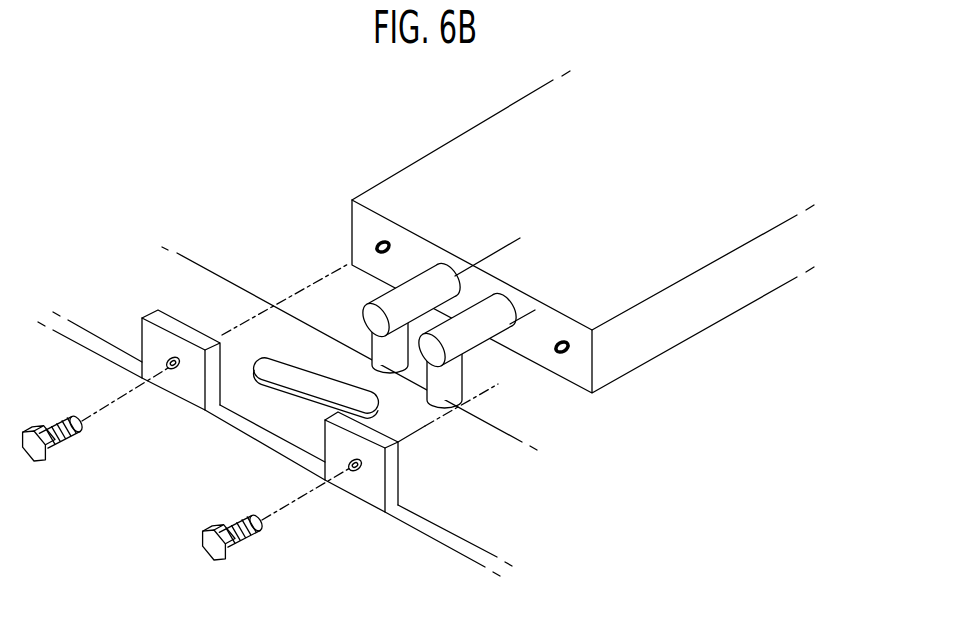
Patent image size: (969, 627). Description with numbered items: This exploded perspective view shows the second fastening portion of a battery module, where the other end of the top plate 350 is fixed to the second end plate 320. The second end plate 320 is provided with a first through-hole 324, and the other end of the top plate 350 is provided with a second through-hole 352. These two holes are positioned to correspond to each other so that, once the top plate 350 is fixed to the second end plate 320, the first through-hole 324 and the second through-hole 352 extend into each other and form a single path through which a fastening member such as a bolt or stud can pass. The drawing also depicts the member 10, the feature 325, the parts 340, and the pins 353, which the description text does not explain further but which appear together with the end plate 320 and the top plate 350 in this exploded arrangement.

The vehicle body member 10 is at (465, 512).
The bracket 320 is at (312, 540).
The bolt holes 324 is at (174, 368).
The slot 325 is at (265, 433).
The bolts 340 is at (207, 548).
The block 350 is at (476, 158).
The holes 352 is at (386, 244).
The pins 353 is at (388, 318).